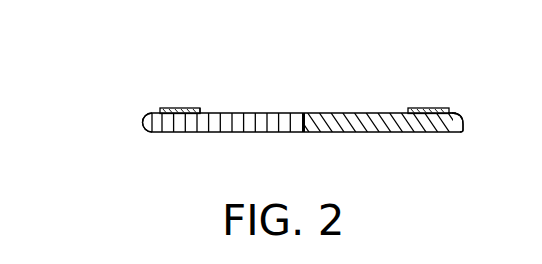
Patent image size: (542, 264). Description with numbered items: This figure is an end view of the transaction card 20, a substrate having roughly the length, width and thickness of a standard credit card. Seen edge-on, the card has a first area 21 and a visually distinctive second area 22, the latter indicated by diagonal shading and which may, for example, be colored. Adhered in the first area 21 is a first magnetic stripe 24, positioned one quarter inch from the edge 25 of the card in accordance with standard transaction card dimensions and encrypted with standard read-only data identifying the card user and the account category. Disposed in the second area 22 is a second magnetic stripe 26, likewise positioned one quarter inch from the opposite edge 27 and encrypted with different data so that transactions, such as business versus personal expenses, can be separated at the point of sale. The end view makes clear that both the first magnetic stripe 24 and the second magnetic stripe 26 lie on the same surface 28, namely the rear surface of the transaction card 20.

The transaction card 20 is at (145, 110).
The first area 21 is at (147, 112).
The second area 22 is at (456, 112).
The first magnetic stripe 24 is at (198, 109).
The edge 25 is at (146, 121).
The second magnetic stripe 26 is at (423, 108).
The edge 27 is at (465, 127).
The surface 28 is at (350, 108).